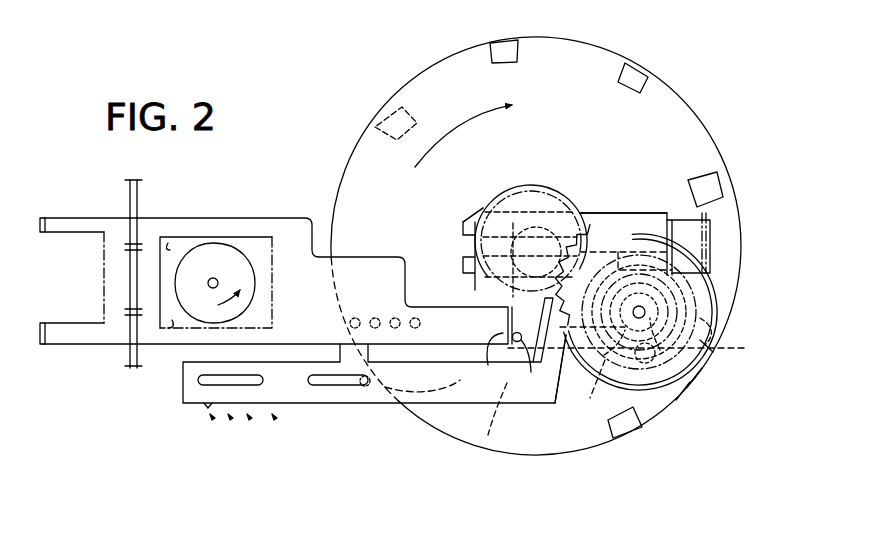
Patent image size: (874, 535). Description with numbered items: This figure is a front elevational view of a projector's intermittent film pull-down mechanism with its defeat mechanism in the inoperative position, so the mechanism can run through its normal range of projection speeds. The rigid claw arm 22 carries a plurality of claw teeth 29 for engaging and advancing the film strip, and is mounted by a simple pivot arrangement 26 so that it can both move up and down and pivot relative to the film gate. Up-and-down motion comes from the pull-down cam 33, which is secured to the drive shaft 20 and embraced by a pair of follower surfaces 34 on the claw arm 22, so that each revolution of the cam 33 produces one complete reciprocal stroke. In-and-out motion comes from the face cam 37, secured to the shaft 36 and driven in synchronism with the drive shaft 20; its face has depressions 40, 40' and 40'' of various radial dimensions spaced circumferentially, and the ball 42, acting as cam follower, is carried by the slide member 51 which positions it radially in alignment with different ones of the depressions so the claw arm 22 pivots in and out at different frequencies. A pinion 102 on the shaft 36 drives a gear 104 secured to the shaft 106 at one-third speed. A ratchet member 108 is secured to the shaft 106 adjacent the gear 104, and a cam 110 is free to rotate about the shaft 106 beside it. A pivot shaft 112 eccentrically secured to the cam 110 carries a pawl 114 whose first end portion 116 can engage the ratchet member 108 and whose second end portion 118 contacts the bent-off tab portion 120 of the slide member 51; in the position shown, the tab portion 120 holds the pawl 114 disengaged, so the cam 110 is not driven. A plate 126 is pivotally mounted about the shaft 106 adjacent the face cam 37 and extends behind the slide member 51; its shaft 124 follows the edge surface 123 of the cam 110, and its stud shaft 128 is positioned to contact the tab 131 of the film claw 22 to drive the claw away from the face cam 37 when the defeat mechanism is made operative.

The drive shaft 20 is at (222, 277).
The claw arm 22 is at (118, 276).
The pivot axis 26 is at (128, 192).
The claw teeth 29 is at (42, 218).
The pull-down cam 33 is at (213, 258).
The follower surfaces 34 is at (170, 243).
The shaft 36 is at (535, 240).
The face cam 37 is at (563, 74).
The indentation 40 is at (560, 241).
The indentation 40' is at (543, 142).
The indentation 40'' is at (483, 440).
The ball 42 is at (350, 322).
The slide member 51 is at (294, 386).
The pinion 102 is at (560, 205).
The gear 104 is at (592, 273).
The shaft 106 is at (645, 312).
The ratchet member 108 is at (712, 380).
The cam 110 is at (726, 354).
The pivot shaft 112 is at (576, 369).
The pawl 114 is at (583, 388).
The first end portion 116 is at (625, 362).
The second end portion 118 is at (700, 280).
The tab portion 120 is at (700, 236).
The edge surface 123 is at (623, 228).
The shaft 124 is at (693, 400).
The plate 126 is at (522, 322).
The stud shaft 128 is at (493, 380).
The tab 131 is at (493, 352).